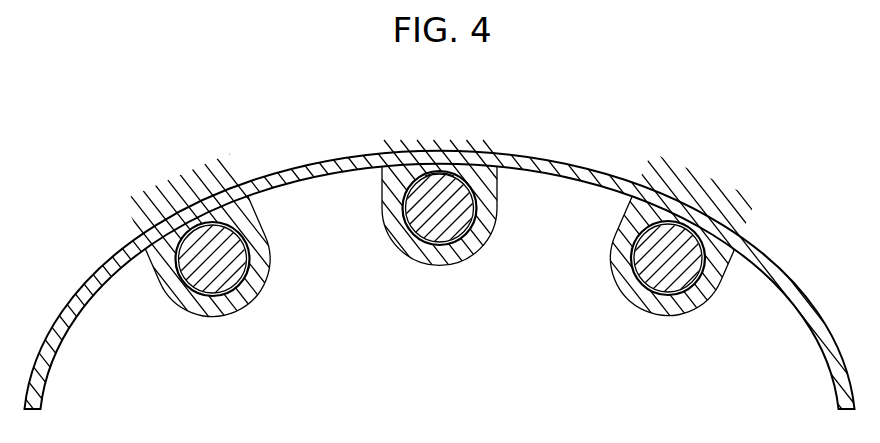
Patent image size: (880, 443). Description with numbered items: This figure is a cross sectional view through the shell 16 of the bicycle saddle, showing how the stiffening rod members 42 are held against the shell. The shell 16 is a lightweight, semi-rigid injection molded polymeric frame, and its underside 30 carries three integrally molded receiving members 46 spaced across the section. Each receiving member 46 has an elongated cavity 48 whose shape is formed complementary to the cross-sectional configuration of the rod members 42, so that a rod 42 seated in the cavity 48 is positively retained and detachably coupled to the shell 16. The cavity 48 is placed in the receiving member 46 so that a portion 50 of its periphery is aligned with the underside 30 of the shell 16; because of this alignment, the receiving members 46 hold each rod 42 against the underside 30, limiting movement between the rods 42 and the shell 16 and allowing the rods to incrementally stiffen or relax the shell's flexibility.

The shell 16 is at (792, 295).
The underside 30 is at (93, 290).
The rod members 42 is at (427, 222).
The receiving members 46 is at (495, 215).
The cavity 48 is at (473, 230).
The portion of the periphery of the cavity 50 is at (447, 171).